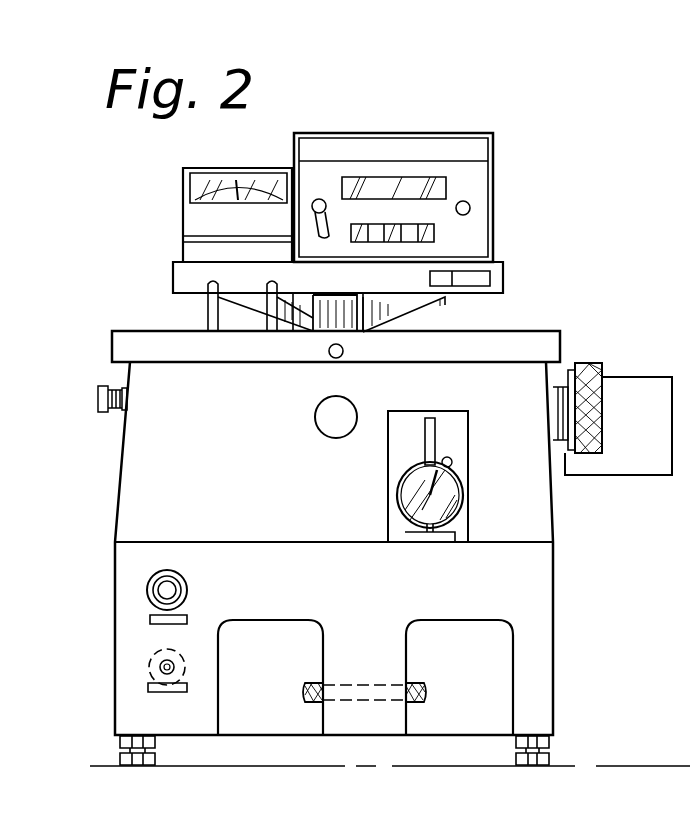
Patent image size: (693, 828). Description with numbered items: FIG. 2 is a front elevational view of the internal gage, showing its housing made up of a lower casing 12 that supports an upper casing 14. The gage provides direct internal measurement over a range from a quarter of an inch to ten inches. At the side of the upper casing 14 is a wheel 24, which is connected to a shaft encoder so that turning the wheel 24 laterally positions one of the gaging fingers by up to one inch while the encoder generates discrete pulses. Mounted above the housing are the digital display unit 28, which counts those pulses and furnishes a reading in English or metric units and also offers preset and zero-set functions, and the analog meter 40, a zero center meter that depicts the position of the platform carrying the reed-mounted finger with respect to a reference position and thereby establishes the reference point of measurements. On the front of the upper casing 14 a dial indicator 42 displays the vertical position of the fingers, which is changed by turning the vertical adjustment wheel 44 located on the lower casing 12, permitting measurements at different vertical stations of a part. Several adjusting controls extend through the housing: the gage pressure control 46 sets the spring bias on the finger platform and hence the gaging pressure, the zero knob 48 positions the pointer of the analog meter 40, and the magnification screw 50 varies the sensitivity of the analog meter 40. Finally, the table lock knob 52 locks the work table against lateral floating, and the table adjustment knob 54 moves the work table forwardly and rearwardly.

The lower casing 12 is at (535, 578).
The upper casing 14 is at (540, 521).
The wheel 24 is at (590, 370).
The digital display unit 28 is at (493, 207).
The analog meter 40 is at (195, 212).
The dial indicator 42 is at (400, 491).
The vertical adjustment wheel 44 is at (420, 683).
The gage pressure control 46 is at (102, 412).
The zero knob 48 is at (185, 588).
The magnification screw 50 is at (170, 665).
The table lock knob 52 is at (330, 355).
The table adjustment knob 54 is at (332, 421).